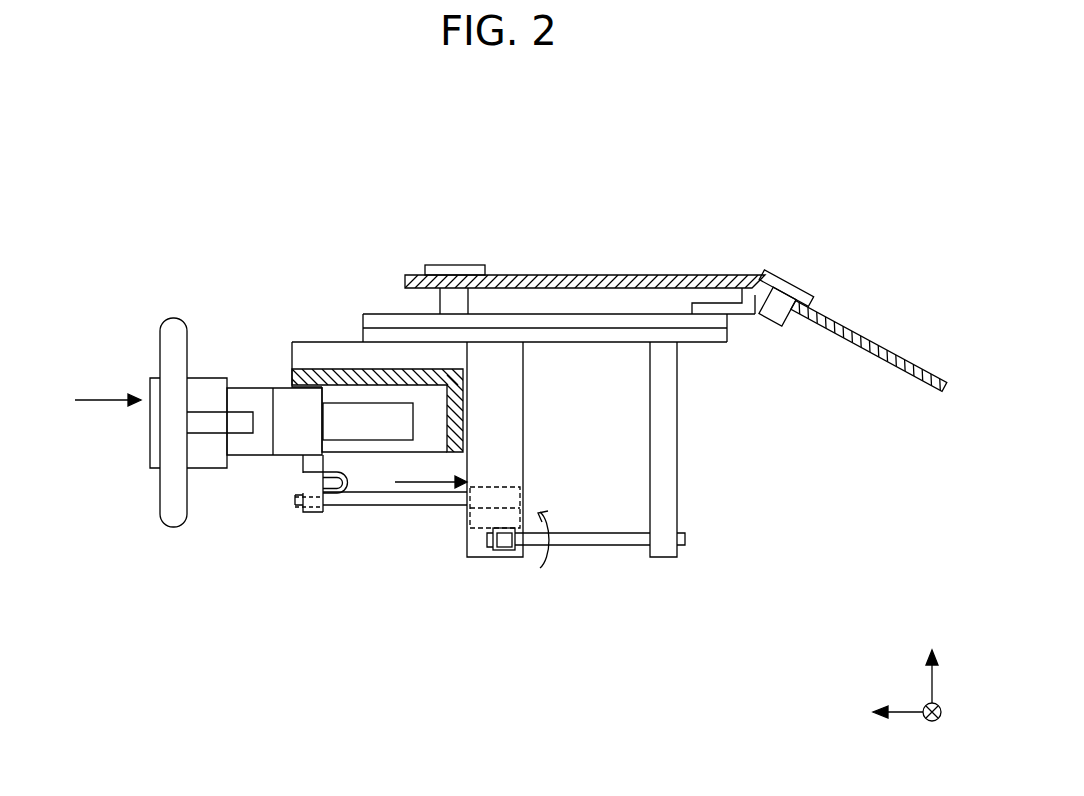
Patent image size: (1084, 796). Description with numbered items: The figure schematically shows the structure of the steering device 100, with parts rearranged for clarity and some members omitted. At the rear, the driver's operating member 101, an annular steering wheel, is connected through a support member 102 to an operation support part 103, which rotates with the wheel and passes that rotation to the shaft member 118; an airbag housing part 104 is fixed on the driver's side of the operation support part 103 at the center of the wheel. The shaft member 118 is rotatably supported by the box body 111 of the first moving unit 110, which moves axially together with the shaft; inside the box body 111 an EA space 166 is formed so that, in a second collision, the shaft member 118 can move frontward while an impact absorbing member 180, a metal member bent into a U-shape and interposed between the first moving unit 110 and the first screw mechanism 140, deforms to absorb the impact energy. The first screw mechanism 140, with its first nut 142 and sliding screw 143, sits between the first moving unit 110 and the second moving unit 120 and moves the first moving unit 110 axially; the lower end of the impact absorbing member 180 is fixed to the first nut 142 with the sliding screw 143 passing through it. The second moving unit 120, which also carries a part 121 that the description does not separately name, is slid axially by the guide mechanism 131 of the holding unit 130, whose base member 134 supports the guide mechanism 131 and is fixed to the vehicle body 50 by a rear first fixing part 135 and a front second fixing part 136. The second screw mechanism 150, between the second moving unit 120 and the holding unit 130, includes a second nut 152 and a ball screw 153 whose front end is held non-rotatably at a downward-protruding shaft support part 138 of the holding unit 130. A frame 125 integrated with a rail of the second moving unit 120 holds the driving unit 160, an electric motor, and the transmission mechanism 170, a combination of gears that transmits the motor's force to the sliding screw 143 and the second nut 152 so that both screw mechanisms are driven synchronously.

The steering device 100 is at (105, 210).
The operating member 101 is at (178, 338).
The support member 102 is at (200, 427).
The operation support part 103 is at (293, 407).
The airbag housing part 104 is at (158, 428).
The first moving unit 110 is at (353, 352).
The box body 111 is at (335, 370).
The shaft member 118 is at (338, 418).
The second moving unit 120 is at (496, 341).
The plate portion 121 is at (510, 352).
The frame 125 is at (470, 557).
The holding unit 130 is at (679, 296).
The guide mechanism 131 is at (715, 336).
The base member 134 is at (523, 322).
The first fixing part 135 is at (452, 265).
The second fixing part 136 is at (782, 275).
The shaft support part 138 is at (688, 483).
The first screw mechanism 140 is at (337, 535).
The first nut 142 is at (315, 514).
The sliding screw 143 is at (395, 539).
The second screw mechanism 150 is at (606, 498).
The second nut 152 is at (508, 552).
The ball screw 153 is at (580, 548).
The driving unit 160 is at (495, 490).
The EA space 166 is at (433, 418).
The transmission mechanism 170 is at (507, 520).
The impact absorbing member 180 is at (294, 483).
The vehicle body 50 is at (585, 277).